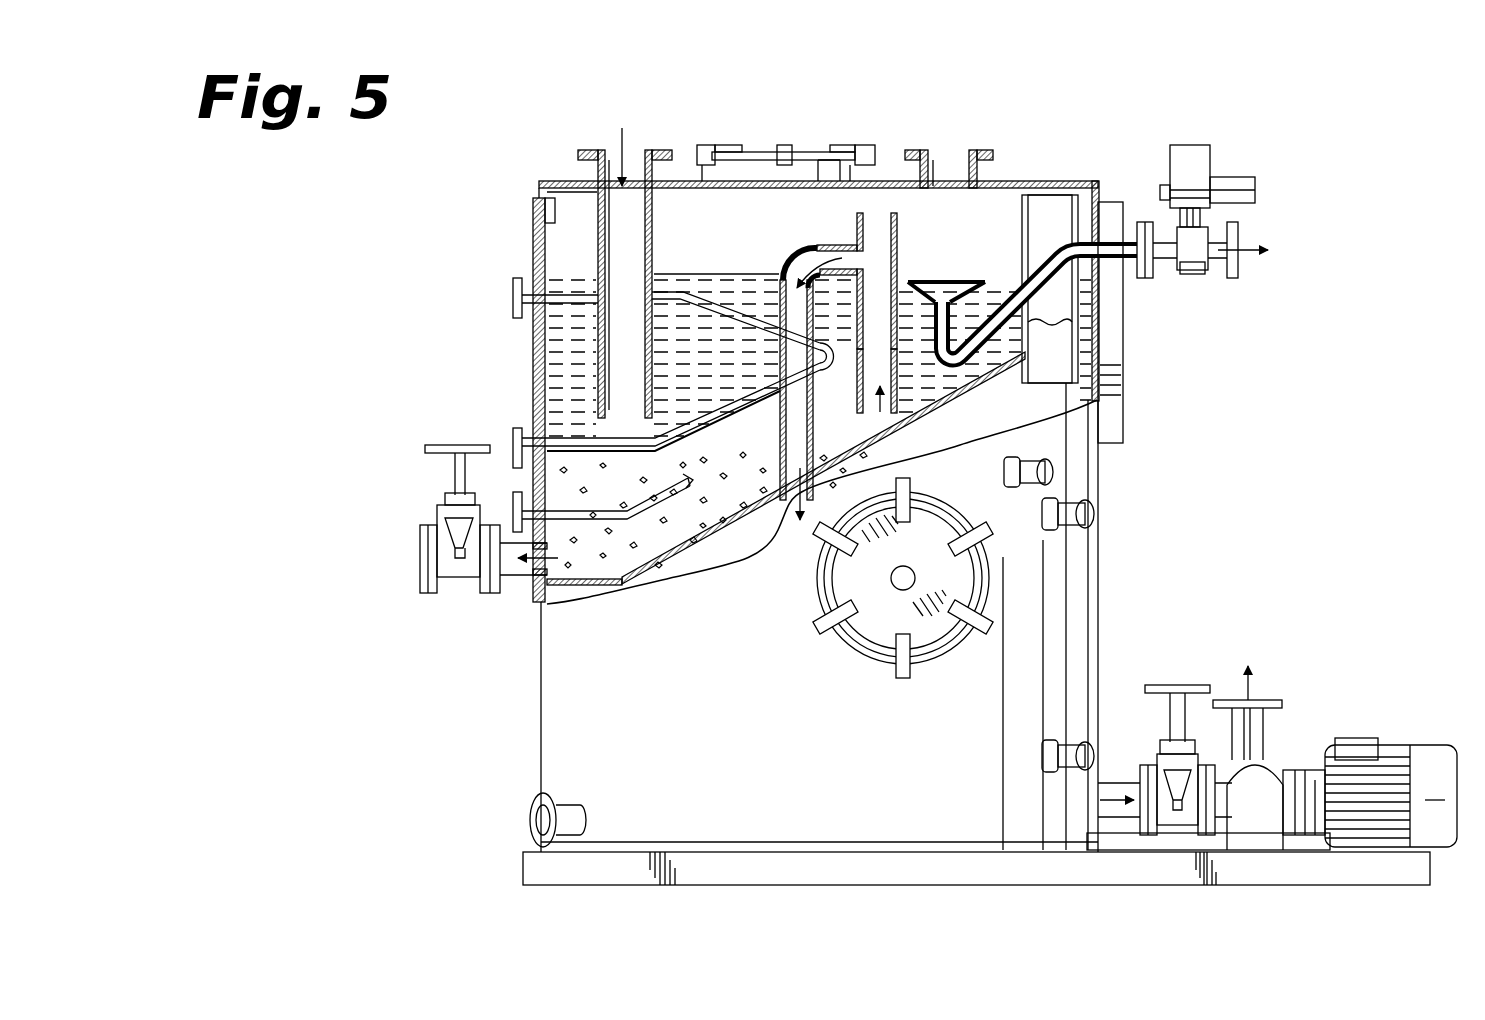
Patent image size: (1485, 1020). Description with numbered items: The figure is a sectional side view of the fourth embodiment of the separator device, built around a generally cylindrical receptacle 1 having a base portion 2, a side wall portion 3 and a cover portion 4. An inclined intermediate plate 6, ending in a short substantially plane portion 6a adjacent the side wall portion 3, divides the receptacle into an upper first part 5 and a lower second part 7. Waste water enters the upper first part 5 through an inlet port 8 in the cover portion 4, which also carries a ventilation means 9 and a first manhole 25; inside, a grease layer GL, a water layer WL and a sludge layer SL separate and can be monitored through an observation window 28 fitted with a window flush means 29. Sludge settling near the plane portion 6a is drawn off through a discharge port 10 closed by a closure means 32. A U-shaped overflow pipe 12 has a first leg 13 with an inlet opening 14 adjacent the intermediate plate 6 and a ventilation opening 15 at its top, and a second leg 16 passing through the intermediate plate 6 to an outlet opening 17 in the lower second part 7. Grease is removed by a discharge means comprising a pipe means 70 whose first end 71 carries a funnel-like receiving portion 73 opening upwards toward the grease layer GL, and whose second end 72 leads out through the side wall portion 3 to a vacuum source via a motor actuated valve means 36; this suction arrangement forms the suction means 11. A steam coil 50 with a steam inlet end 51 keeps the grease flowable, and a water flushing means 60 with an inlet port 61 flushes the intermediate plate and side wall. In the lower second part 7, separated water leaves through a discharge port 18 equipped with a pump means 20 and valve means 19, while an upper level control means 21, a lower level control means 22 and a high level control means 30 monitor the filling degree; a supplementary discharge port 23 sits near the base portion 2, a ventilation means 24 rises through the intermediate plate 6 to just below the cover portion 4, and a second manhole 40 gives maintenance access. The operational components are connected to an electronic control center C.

The receptacle 1 is at (1106, 108).
The base portion 2 is at (850, 853).
The side wall portion 3 is at (1098, 596).
The cover portion 4 is at (680, 180).
The upper first part 5 is at (926, 229).
The intermediate plate 6 is at (948, 396).
The plane portion of intermediate plate 6a is at (600, 586).
The lower second part 7 is at (694, 747).
The inlet port 8 is at (612, 140).
The ventilation means 9 is at (952, 162).
The discharge port 10 is at (526, 568).
The suction means 11 is at (1200, 290).
The overflow pipe 12 is at (800, 243).
The first leg 13 is at (866, 396).
The inlet opening 14 is at (884, 418).
The ventilation opening 15 is at (884, 222).
The second leg 16 is at (784, 352).
The outlet opening 17 is at (792, 526).
The discharge port 18 is at (1116, 792).
The valve means 19 is at (1176, 690).
The pump means 20 is at (1350, 702).
The upper level control means 21 is at (1094, 516).
The lower level control means 22 is at (1056, 745).
The supplementary discharge port 23 is at (530, 820).
The ventilation means 24 is at (1045, 212).
The first manhole 25 is at (792, 160).
The observation window 28 is at (533, 222).
The window flush means 29 is at (566, 190).
The high level control means 30 is at (1024, 484).
The closure means 32 is at (460, 576).
The motor actuated valve means 36 is at (1206, 142).
The second manhole 40 is at (870, 628).
The steam coil 50 is at (572, 300).
The steam inlet end 51 is at (515, 440).
The water flushing means 60 is at (692, 490).
The inlet port 61 is at (516, 514).
The pipe means 70 is at (1036, 266).
The first end 71 is at (934, 344).
The second end 72 is at (1126, 246).
The receiving portion 73 is at (945, 292).
The electronic control center C is at (1114, 336).
The grease layer GL is at (678, 286).
The water layer WL is at (574, 360).
The sludge layer SL is at (658, 545).